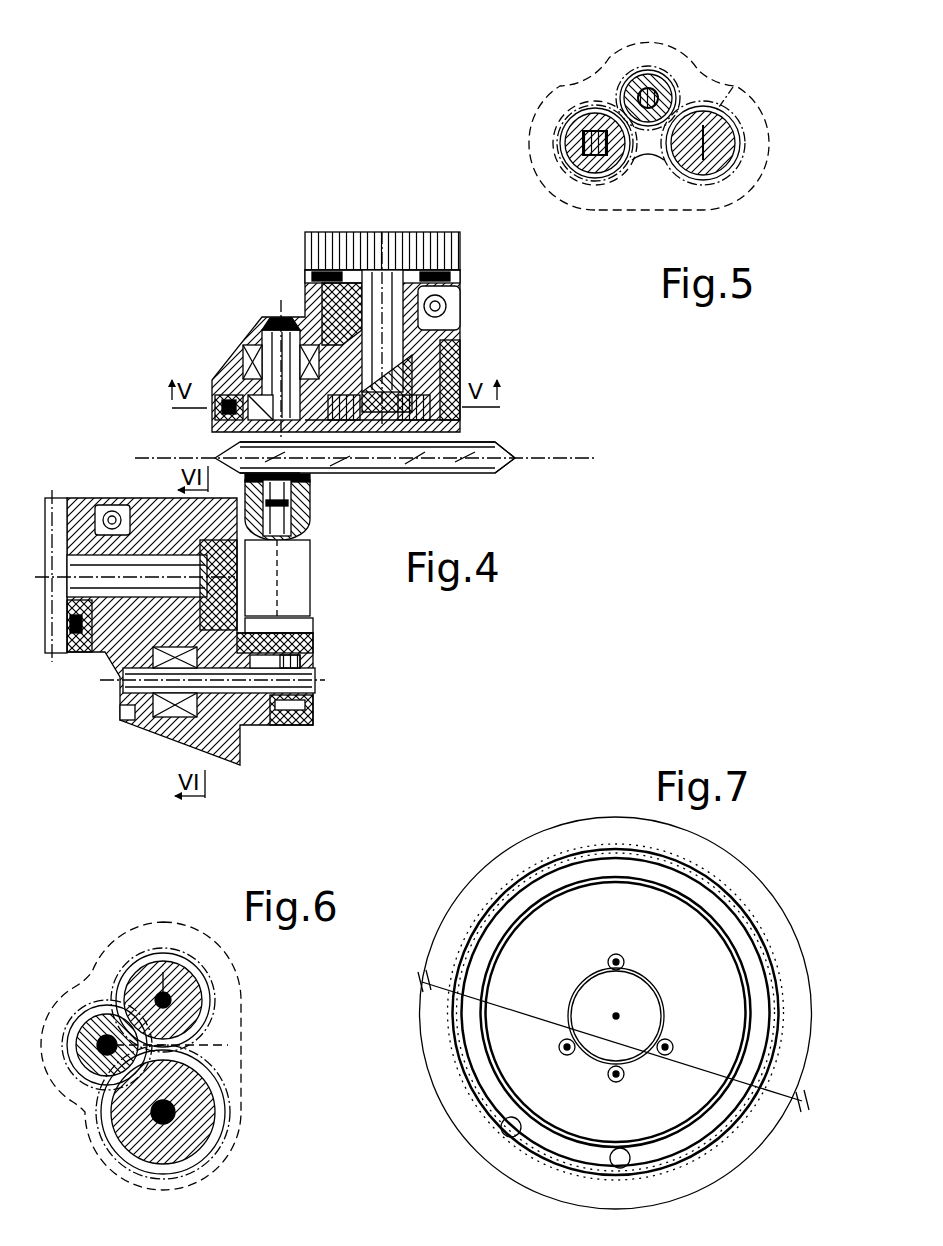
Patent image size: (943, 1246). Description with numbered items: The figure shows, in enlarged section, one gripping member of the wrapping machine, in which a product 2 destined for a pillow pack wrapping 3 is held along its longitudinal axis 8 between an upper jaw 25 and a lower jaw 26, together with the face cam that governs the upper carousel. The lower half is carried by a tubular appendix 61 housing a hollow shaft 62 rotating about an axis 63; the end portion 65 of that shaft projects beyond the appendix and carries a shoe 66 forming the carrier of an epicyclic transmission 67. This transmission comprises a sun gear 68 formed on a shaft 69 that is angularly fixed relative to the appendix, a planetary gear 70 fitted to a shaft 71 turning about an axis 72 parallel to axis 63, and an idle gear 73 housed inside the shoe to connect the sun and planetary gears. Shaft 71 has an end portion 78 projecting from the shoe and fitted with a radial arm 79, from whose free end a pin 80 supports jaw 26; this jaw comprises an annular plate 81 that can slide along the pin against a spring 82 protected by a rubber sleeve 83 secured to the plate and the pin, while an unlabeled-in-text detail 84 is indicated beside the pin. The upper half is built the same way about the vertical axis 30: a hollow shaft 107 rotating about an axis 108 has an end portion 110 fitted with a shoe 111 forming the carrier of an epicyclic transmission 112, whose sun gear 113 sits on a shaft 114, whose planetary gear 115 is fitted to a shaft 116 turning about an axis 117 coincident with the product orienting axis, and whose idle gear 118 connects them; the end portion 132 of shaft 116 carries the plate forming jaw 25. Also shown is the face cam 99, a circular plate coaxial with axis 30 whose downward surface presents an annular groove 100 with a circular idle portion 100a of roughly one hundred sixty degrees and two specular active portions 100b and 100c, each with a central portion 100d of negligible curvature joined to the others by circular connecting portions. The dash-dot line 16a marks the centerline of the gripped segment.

In FIG. 4, the product 2 is at (490, 442).
In FIG. 4, the pillow pack wrapping 3 is at (505, 448).
In FIG. 4, the longitudinal axis 8 is at (482, 476).
In FIG. 4, the axis line 16a is at (175, 455).
In FIG. 4, the jaw 25 is at (220, 448).
In FIG. 4, the jaw 26 is at (240, 482).
In FIG. 7, the vertical axis 30 is at (620, 1020).
In FIG. 4, the tubular appendix 61 is at (62, 505).
In FIG. 4, the hollow shaft 62 is at (106, 510).
In FIG. 4, the axis 63 is at (57, 500).
In FIG. 6, the axis 63 is at (165, 958).
In FIG. 4, the end portion 65 is at (150, 505).
In FIG. 4, the shoe 66 is at (102, 690).
In FIG. 6, the shoe 66 is at (93, 955).
In FIG. 4, the epicyclic transmission 67 is at (243, 722).
In FIG. 6, the epicyclic transmission 67 is at (182, 1048).
In FIG. 4, the sun gear 68 is at (315, 650).
In FIG. 6, the sun gear 68 is at (150, 980).
In FIG. 4, the shaft 69 is at (80, 595).
In FIG. 4, the planetary gear 70 is at (192, 740).
In FIG. 6, the planetary gear 70 is at (135, 1128).
In FIG. 4, the shaft 71 is at (178, 715).
In FIG. 4, the axis 72 is at (316, 688).
In FIG. 6, the axis 72 is at (175, 1112).
In FIG. 6, the idle gear 73 is at (82, 1025).
In FIG. 4, the end portion 78 is at (300, 700).
In FIG. 4, the radial arm 79 is at (292, 605).
In FIG. 4, the pin 80 is at (312, 548).
In FIG. 4, the annular plate 81 is at (312, 484).
In FIG. 4, the spring 82 is at (312, 518).
In FIG. 4, the rubber sleeve 83 is at (312, 498).
In FIG. 4, the slot 84 is at (290, 562).
In FIG. 7, the face cam 99 is at (798, 1027).
In FIG. 7, the annular groove 100 is at (755, 1067).
In FIG. 7, the idle portion 100a is at (518, 1148).
In FIG. 7, the active portion 100b is at (554, 878).
In FIG. 7, the active portion 100c is at (741, 934).
In FIG. 7, the central portion 100d is at (546, 908).
In FIG. 4, the hollow shaft 107 is at (441, 232).
In FIG. 4, the axis 108 is at (388, 245).
In FIG. 5, the axis 108 is at (733, 87).
In FIG. 4, the end portion 110 is at (458, 338).
In FIG. 4, the shoe 111 is at (458, 352).
In FIG. 5, the shoe 111 is at (593, 70).
In FIG. 4, the epicyclic transmission 112 is at (322, 280).
In FIG. 5, the epicyclic transmission 112 is at (648, 170).
In FIG. 4, the sun gear 113 is at (413, 445).
In FIG. 5, the sun gear 113 is at (727, 146).
In FIG. 4, the shaft 114 is at (395, 385).
In FIG. 4, the planetary gear 115 is at (262, 355).
In FIG. 5, the planetary gear 115 is at (570, 134).
In FIG. 4, the shaft 116 is at (250, 348).
In FIG. 4, the axis 117 is at (278, 320).
In FIG. 5, the axis 117 is at (605, 178).
In FIG. 5, the idle gear 118 is at (652, 97).
In FIG. 4, the end portion 132 is at (275, 378).